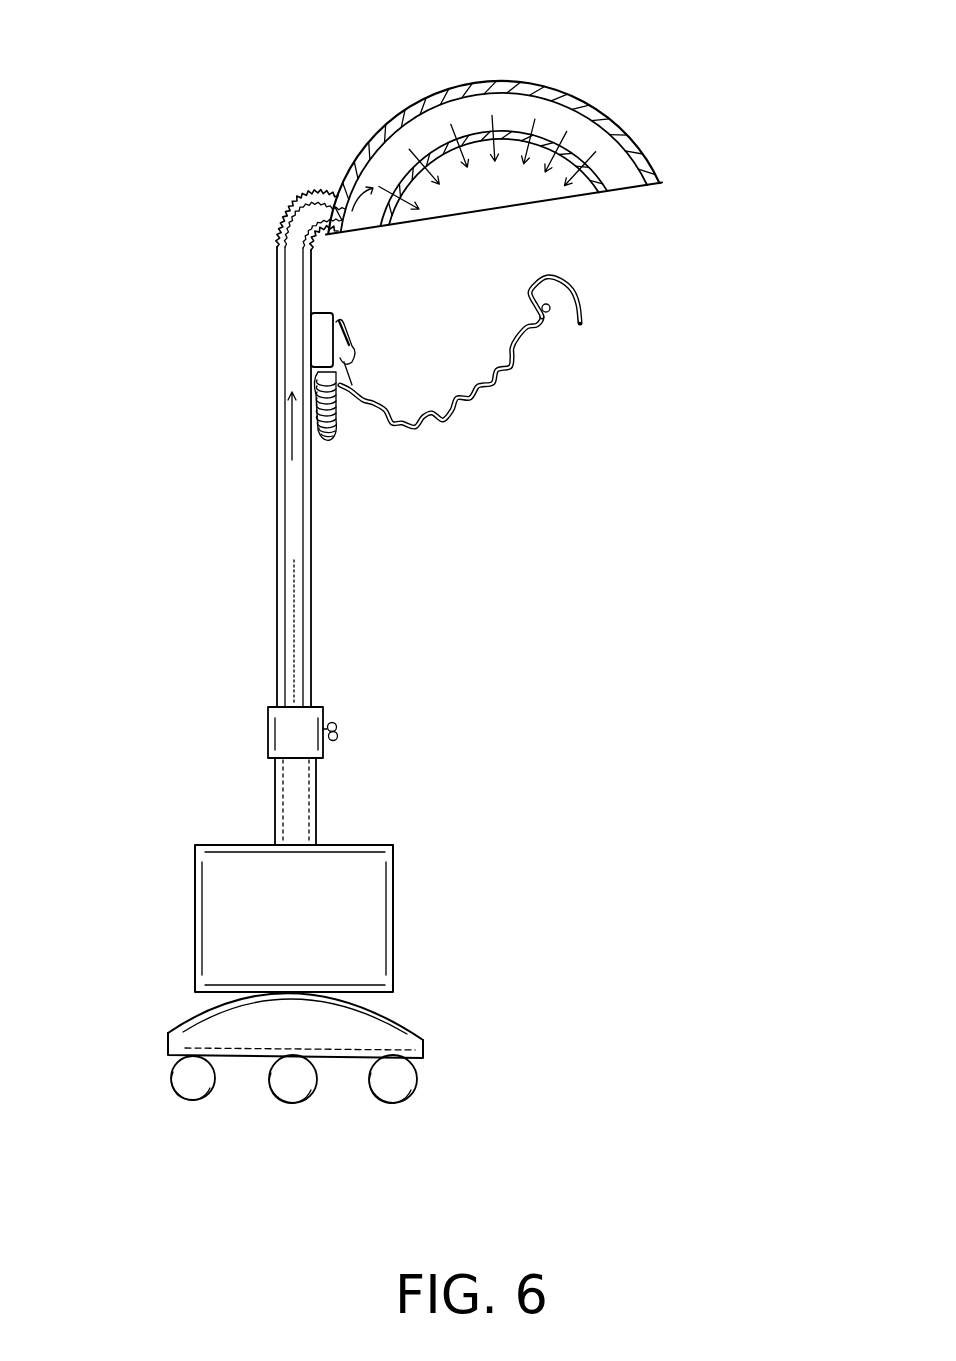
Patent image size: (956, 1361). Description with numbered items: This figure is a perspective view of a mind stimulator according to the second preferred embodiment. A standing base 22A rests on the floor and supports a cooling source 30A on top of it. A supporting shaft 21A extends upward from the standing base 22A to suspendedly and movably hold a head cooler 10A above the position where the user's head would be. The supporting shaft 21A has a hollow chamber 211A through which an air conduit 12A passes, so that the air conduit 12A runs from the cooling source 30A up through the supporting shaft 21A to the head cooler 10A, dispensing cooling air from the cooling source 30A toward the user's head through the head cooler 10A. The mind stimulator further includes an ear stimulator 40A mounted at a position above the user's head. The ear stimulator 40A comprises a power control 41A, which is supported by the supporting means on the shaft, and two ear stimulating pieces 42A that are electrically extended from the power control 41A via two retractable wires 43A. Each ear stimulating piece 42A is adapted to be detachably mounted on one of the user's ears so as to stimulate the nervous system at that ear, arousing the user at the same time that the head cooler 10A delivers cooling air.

The head cooler 10A is at (648, 135).
The ear stimulator 40A is at (233, 506).
The power control 41A is at (320, 345).
The ear stimulating piece 42A is at (582, 292).
The retractable wire 43A is at (418, 430).
The air conduit 12A is at (293, 512).
The hollow chamber 211A is at (292, 593).
The supporting shaft 21A is at (283, 655).
The cooling source 30A is at (348, 915).
The standing base 22A is at (205, 1035).